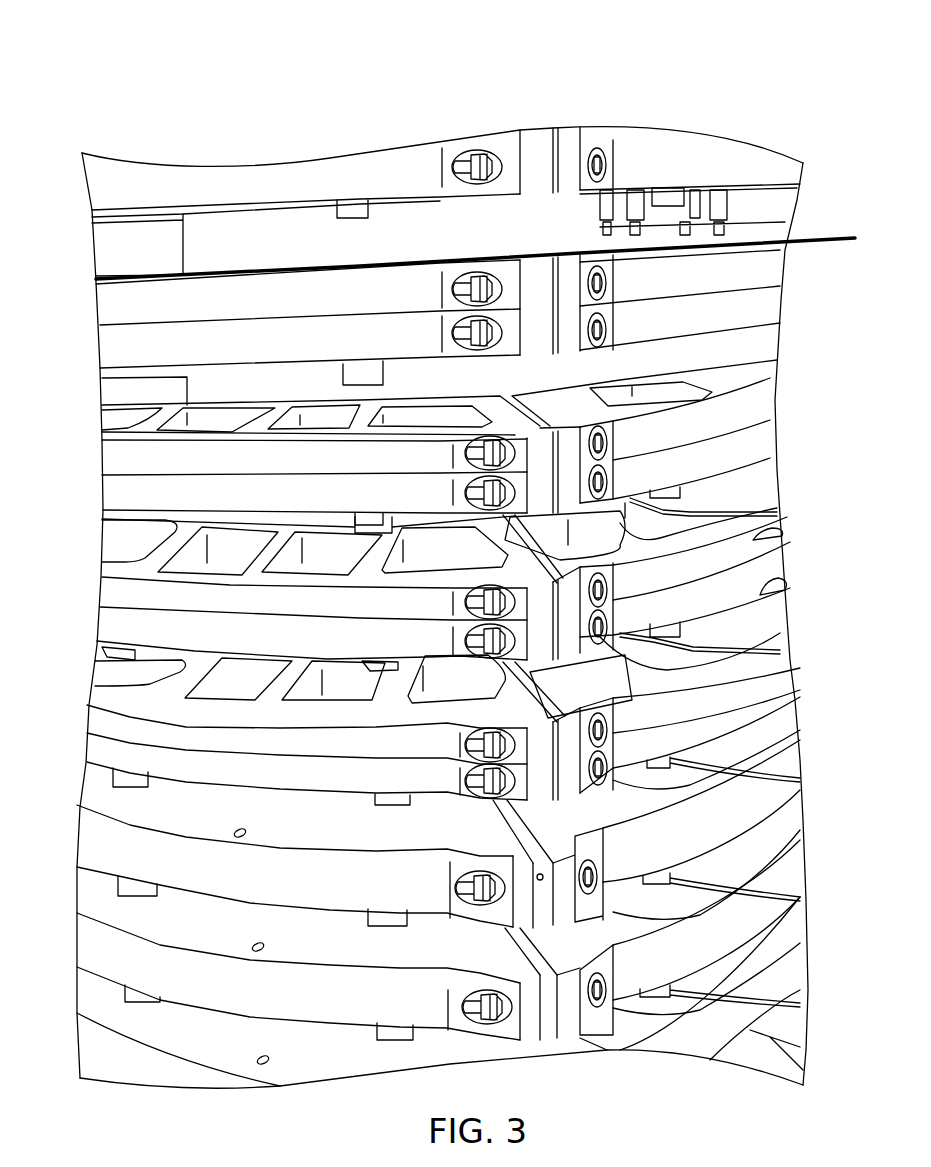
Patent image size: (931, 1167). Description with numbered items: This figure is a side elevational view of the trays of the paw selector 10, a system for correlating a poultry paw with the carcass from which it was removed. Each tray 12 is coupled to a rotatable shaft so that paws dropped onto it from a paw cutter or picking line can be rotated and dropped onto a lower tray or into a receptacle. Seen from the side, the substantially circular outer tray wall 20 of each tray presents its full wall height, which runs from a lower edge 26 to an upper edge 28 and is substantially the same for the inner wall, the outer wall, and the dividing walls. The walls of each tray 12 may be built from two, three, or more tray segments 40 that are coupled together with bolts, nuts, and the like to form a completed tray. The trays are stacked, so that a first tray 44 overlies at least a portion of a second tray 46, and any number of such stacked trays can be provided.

The paw selector 10 is at (733, 83).
The tray 12 is at (767, 273).
The outer tray wall 20 is at (760, 413).
The lower edge 26 is at (767, 577).
The upper edge 28 is at (770, 538).
The tray segment 40 is at (95, 717).
The first tray 44 is at (100, 183).
The second tray 46 is at (108, 300).